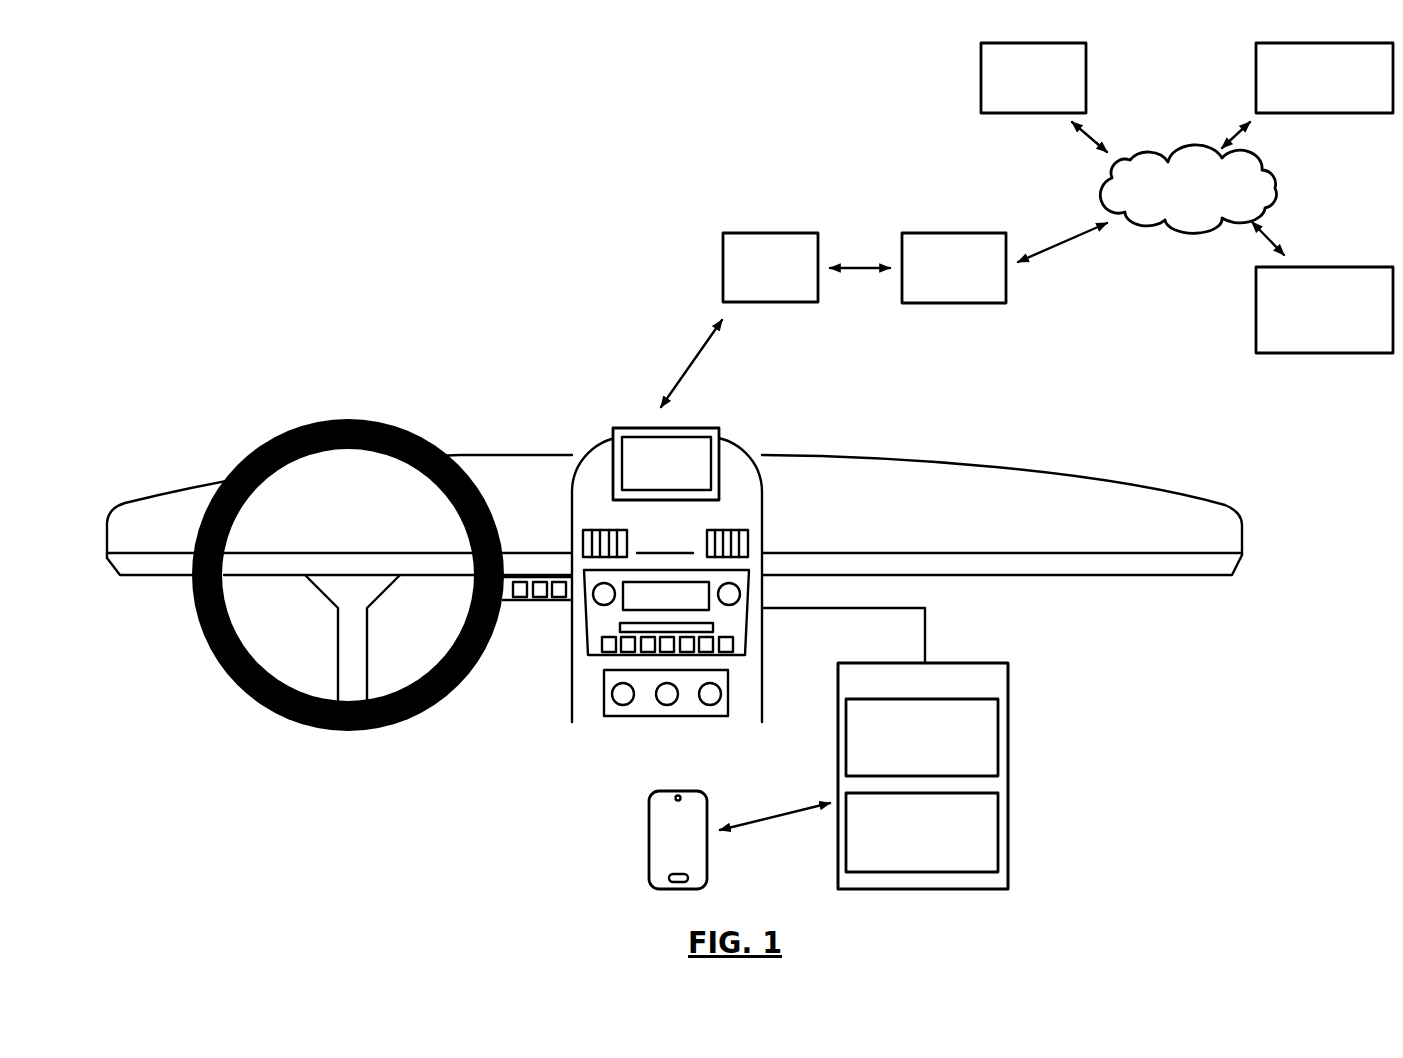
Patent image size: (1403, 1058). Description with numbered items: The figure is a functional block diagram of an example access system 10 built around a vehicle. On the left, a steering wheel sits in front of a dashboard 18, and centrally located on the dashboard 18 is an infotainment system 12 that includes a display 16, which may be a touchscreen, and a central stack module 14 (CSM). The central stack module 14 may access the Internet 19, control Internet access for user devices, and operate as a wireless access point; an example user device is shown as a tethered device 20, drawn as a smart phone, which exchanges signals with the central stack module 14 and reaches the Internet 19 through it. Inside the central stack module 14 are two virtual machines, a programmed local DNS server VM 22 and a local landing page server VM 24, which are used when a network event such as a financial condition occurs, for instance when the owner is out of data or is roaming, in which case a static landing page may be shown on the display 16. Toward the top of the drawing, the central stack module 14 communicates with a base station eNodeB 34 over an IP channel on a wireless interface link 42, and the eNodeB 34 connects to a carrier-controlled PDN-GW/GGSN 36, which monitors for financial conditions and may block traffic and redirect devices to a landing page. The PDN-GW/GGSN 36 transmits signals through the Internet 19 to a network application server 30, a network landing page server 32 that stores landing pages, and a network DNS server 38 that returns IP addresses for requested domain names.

The access system 10 is at (279, 206).
The infotainment system 12 is at (777, 505).
The central stack module 14 is at (985, 663).
The display 16 is at (622, 432).
The dashboard 18 is at (1000, 462).
The Internet 19 is at (1280, 172).
The tethered device 20 is at (648, 820).
The programmed local DNS server VM 22 is at (998, 737).
The local landing page server VM 24 is at (998, 831).
The network application server 30 is at (1256, 75).
The network landing page server 32 is at (1343, 267).
The eNodeB 34 is at (768, 233).
The PDN-GW/GGSN 36 is at (953, 233).
The network DNS server 38 is at (981, 75).
The wireless interface link 42 is at (690, 360).